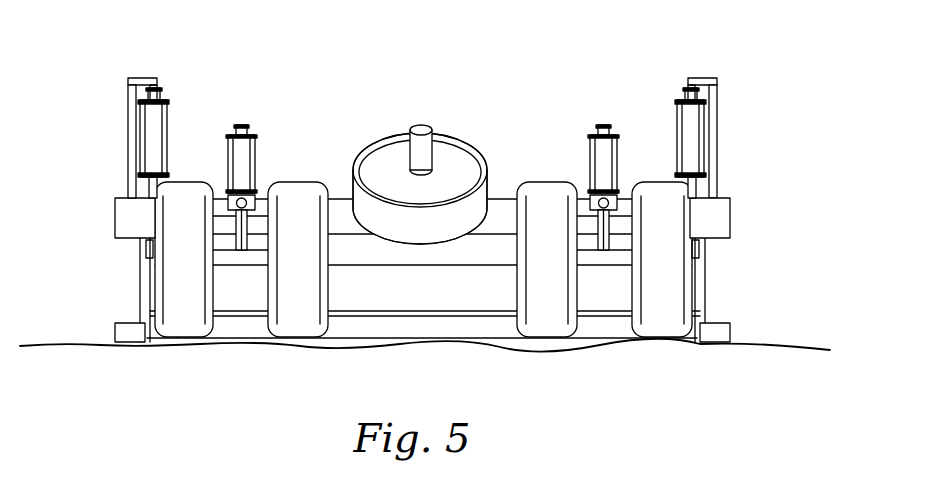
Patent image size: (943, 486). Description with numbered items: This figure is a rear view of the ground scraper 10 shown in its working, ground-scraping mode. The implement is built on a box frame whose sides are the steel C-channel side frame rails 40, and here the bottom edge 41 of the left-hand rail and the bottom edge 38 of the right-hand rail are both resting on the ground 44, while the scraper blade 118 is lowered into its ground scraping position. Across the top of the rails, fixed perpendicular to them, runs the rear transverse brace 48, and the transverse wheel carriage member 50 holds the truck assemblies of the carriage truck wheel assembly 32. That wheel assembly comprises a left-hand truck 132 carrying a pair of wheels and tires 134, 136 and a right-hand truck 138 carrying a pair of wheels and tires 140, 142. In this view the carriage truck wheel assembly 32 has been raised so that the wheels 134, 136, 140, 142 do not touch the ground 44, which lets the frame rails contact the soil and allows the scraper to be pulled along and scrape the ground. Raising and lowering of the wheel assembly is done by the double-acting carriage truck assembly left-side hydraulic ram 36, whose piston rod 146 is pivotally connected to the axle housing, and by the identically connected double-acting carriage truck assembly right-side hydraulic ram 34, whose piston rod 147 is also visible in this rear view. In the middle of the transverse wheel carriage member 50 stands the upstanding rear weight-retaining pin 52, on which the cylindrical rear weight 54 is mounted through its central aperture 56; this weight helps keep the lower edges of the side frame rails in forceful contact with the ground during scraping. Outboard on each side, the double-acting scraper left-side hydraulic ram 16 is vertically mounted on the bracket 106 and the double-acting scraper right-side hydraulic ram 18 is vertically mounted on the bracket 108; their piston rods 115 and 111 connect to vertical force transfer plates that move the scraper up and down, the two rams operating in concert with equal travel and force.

The ground scraper 10 is at (226, 40).
The double-acting scraper left-side hydraulic ram 16 is at (160, 122).
The double-acting scraper right-side hydraulic ram 18 is at (687, 142).
The carriage truck wheel assembly 32 is at (463, 309).
The double-acting carriage truck assembly right-side hydraulic ram 34 is at (598, 168).
The double-acting carriage truck assembly left-side hydraulic ram 36 is at (237, 166).
The bottom edge of right-hand side frame rail 38 is at (710, 346).
The side frame rail 40 is at (140, 301).
The bottom edge of left-hand side frame rail 41 is at (110, 341).
The ground 44 is at (790, 340).
The rear transverse brace 48 is at (115, 212).
The transverse wheel carriage member 50 is at (423, 245).
The rear weight-retaining pin 52 is at (423, 123).
The rear weight 54 is at (382, 149).
The central aperture 56 is at (437, 167).
The bracket 106 is at (127, 97).
The bracket 108 is at (717, 131).
The piston rod of right-side hydraulic ram 111 is at (697, 193).
The piston rod of left-side hydraulic ram 115 is at (150, 187).
The scraper blade 118 is at (443, 334).
The left-hand truck 132 is at (181, 338).
The wheel and tire 134 is at (307, 333).
The wheel and tire 136 is at (200, 326).
The right-hand truck 138 is at (677, 328).
The wheel and tire 140 is at (672, 279).
The wheel and tire 142 is at (573, 328).
The piston rod of ram 36 146 is at (240, 237).
The piston rod of right-side hydraulic ram 34 147 is at (610, 232).